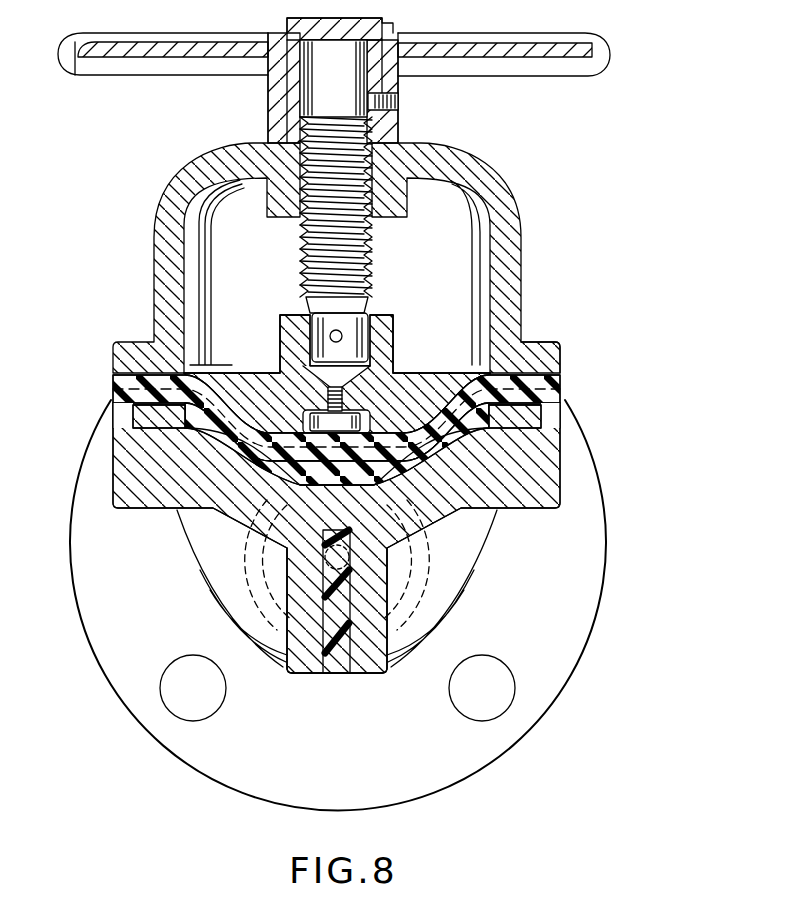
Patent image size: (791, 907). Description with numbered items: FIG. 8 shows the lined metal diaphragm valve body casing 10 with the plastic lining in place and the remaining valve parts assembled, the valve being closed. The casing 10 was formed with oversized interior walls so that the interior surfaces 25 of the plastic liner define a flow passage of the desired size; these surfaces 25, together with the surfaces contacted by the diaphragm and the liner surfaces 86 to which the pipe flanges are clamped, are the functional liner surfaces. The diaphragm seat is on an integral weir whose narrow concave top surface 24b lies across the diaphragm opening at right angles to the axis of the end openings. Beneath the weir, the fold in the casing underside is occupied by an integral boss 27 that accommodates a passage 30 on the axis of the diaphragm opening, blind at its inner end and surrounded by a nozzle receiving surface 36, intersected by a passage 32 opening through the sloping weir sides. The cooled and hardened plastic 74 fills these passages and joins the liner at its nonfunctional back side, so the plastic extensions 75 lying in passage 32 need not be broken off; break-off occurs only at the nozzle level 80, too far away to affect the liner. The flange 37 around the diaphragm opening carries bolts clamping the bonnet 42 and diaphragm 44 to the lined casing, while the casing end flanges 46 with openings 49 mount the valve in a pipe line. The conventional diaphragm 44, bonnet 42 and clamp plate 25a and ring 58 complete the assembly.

The metal diaphragm valve body casing 10 is at (247, 735).
The narrow concave top surface 24b is at (455, 520).
The interior surfaces of plastic liner 25 is at (235, 396).
The diaphragm clamp plate 25a is at (378, 432).
The integral boss 27 is at (372, 676).
The passage 30 is at (405, 624).
The passage 32 is at (352, 565).
The nozzle receiving surface 36 is at (323, 676).
The flange around diaphragm opening 37 is at (543, 470).
The bonnet 42 is at (513, 268).
The diaphragm 44 is at (560, 382).
The casing end flanges 46 is at (434, 797).
The openings 49 is at (503, 722).
The clamp ring 58 is at (547, 413).
The cooled and hardened plastic 74 is at (245, 350).
The plastic extensions 75 is at (330, 572).
The nozzle level 80 is at (344, 668).
The liner surfaces 86 is at (523, 380).